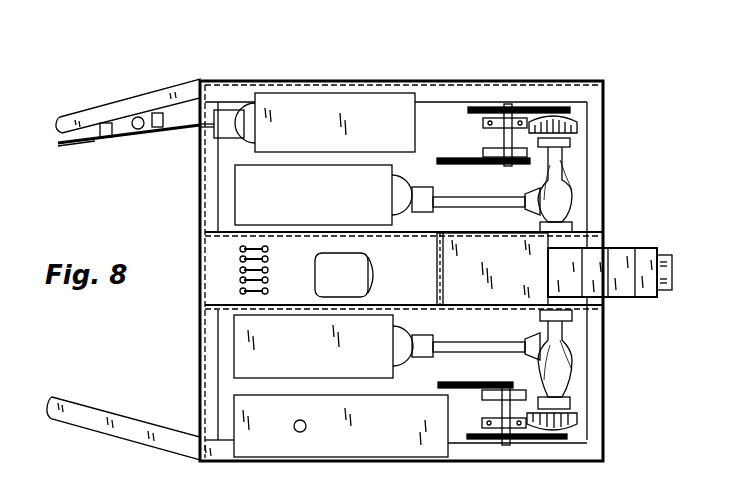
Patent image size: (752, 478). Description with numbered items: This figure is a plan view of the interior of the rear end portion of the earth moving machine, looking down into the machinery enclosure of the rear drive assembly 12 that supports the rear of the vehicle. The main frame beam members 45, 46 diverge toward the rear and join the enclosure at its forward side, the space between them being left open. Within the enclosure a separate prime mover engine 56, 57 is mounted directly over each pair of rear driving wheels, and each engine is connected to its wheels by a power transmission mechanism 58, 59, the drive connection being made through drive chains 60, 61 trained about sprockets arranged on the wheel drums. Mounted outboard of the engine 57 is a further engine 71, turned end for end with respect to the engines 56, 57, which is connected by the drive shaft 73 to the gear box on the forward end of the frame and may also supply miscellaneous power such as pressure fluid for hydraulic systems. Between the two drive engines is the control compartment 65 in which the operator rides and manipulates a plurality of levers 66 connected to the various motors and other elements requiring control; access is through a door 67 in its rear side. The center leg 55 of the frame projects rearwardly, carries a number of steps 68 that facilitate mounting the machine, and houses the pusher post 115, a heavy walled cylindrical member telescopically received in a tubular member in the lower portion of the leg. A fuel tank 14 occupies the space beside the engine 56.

The rear drive assembly 12 is at (400, 70).
The control box 14 is at (388, 440).
The beam member 45 is at (119, 103).
The beam member 46 is at (104, 416).
The center leg 55 is at (626, 250).
The prime mover engine 56 is at (310, 356).
The prime mover engine 57 is at (310, 207).
The power transmission mechanism 58 is at (515, 378).
The power transmission mechanism 59 is at (512, 193).
The drive chain 60 is at (458, 378).
The drive chain 61 is at (452, 158).
The control compartment 65 is at (302, 265).
The levers 66 is at (240, 280).
The door 67 is at (442, 268).
The steps 68 is at (627, 298).
The engine 71 is at (318, 129).
The drive shaft 73 is at (166, 129).
The pusher post 115 is at (676, 258).